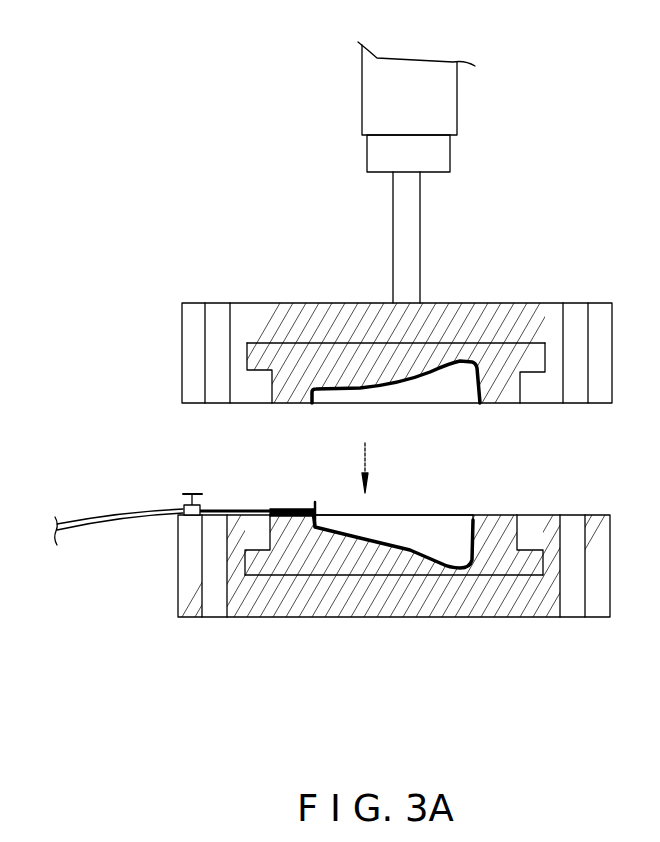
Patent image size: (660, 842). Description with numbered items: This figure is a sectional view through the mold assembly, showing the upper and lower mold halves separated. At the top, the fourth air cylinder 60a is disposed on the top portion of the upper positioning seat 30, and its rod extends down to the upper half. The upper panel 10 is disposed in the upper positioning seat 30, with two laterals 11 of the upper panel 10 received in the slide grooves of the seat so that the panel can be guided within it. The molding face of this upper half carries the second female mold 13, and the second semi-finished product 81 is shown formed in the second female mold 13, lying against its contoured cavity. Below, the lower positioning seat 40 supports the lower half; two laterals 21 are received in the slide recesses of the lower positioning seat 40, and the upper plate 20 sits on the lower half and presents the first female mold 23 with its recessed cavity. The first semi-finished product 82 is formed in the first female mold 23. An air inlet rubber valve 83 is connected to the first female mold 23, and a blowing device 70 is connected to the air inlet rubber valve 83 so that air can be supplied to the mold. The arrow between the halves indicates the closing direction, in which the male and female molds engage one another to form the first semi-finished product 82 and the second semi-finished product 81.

The fourth air cylinder 60a is at (372, 95).
The upper panel 10 is at (350, 355).
The laterals 11 is at (255, 343).
The upper positioning seat 30 is at (450, 303).
The second semi-finished product 81 is at (388, 388).
The second female mold 13 is at (433, 392).
The blowing device 70 is at (162, 508).
The air inlet rubber valve 83 is at (290, 509).
The first semi-finished product 82 is at (385, 540).
The first female mold 23 is at (432, 530).
The laterals 21 is at (258, 577).
The upper plate 20 is at (347, 565).
The lower positioning seat 40 is at (457, 598).